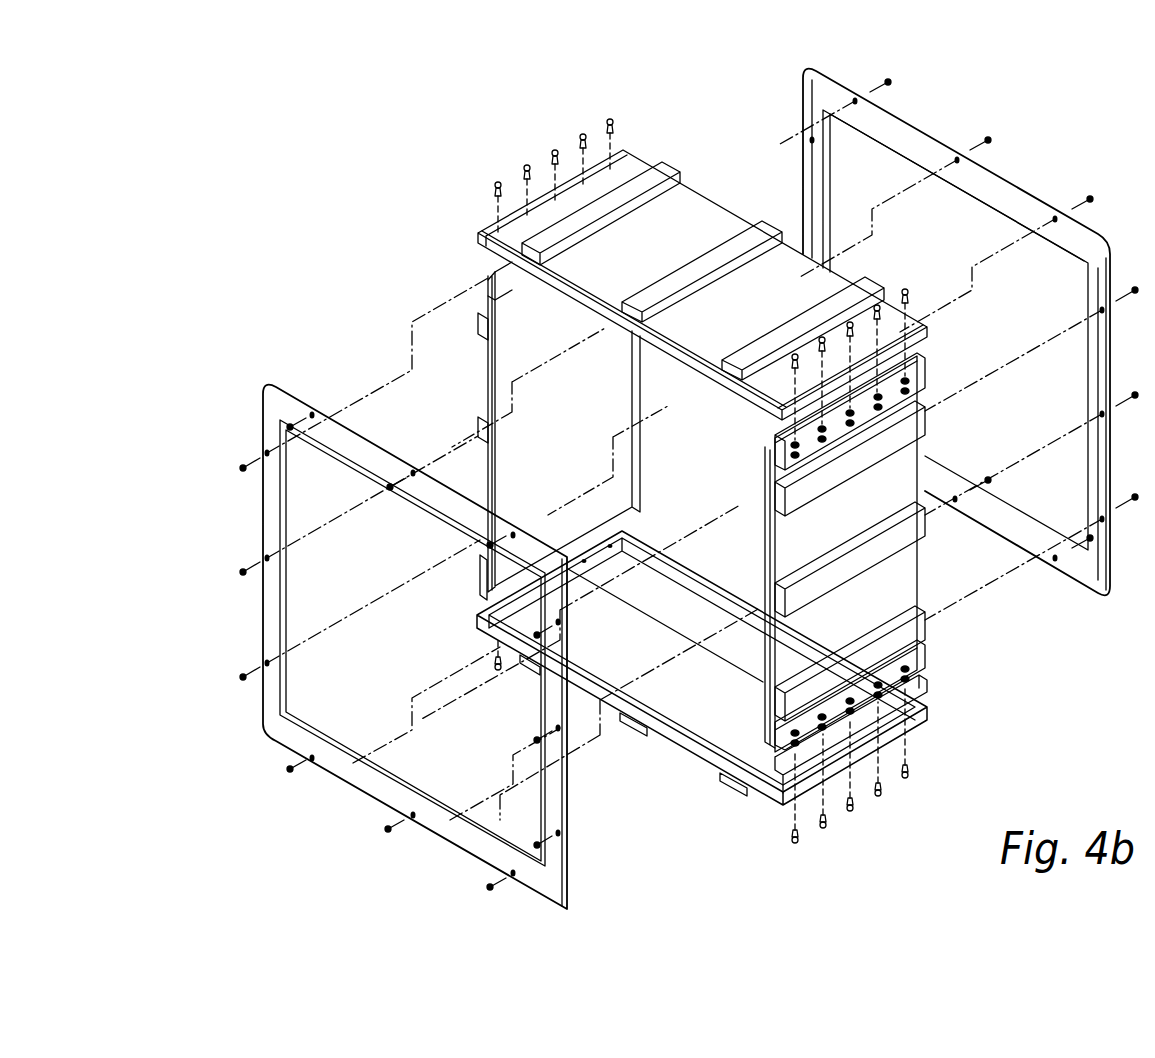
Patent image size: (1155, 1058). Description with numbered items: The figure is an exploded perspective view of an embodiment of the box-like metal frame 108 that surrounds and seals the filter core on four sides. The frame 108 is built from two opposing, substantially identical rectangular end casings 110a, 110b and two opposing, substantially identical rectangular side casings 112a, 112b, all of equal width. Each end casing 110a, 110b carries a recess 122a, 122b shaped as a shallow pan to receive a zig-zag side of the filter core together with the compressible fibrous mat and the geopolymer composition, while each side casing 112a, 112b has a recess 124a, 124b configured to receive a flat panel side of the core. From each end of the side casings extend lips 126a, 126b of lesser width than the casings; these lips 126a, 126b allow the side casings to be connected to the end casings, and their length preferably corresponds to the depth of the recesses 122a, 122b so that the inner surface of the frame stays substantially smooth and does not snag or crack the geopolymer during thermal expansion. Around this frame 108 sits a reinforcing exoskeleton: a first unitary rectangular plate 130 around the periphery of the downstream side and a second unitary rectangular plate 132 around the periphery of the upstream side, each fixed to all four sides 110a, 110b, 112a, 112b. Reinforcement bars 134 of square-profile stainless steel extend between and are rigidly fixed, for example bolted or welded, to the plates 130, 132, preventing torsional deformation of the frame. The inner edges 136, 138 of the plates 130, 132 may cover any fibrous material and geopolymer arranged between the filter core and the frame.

The box-like metal frame 108 is at (352, 205).
The end casing 110a is at (705, 740).
The end casing 110b is at (735, 215).
The side casing 112a is at (540, 398).
The side casing 112b is at (905, 585).
The recess of end casing 122a is at (722, 722).
The recess of end casing 122b is at (516, 250).
The recess of side casing 124a is at (497, 300).
The recess of side casing 124b is at (852, 757).
The lip 126a is at (492, 282).
The lip 126b is at (913, 356).
The first unitary rectangular plate 130 is at (472, 853).
The second unitary rectangular plate 132 is at (1009, 180).
The reinforcement bar 134 is at (660, 162).
The inner edge of first rectangular plate 136 is at (213, 624).
The inner edge of second rectangular plate 138 is at (957, 183).